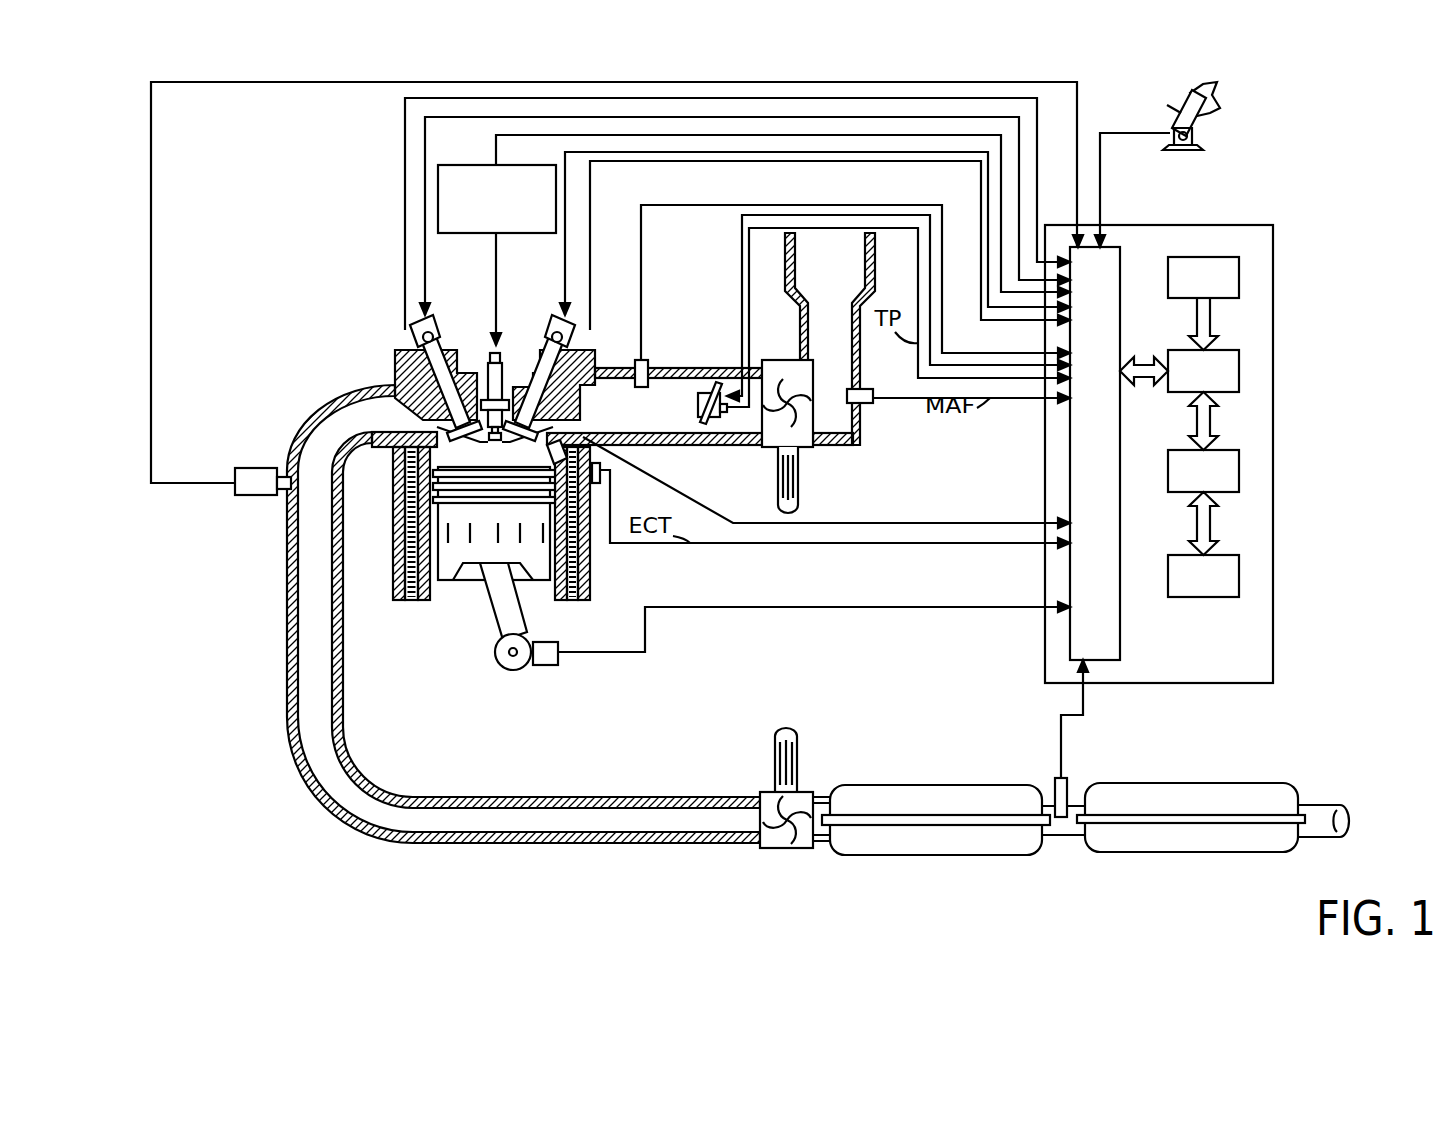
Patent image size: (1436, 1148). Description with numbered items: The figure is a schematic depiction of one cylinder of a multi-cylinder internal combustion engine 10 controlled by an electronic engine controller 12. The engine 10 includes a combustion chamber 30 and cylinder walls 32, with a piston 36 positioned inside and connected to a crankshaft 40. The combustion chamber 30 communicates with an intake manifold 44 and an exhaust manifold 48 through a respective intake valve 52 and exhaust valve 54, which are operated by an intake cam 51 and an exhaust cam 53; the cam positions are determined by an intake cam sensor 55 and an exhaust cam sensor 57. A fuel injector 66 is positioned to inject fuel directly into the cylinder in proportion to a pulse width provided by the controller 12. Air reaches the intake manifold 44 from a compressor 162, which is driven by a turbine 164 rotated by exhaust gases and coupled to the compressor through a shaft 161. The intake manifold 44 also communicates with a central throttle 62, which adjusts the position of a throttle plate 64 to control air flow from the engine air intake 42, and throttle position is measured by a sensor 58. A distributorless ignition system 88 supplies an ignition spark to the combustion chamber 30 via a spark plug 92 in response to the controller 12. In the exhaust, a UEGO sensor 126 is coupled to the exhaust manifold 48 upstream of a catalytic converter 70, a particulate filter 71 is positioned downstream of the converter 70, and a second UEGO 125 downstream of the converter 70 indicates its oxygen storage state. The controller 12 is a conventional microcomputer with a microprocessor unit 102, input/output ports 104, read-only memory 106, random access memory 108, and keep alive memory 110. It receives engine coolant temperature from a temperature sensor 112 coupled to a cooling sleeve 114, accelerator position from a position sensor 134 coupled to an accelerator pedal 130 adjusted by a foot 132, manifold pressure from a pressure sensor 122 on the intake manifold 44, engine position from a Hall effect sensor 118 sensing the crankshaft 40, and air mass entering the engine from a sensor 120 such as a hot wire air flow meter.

The internal combustion engine 10 is at (322, 296).
The electronic engine controller 12 is at (1272, 227).
The combustion chamber 30 is at (492, 450).
The cylinder walls 32 is at (437, 593).
The piston 36 is at (477, 548).
The crankshaft 40 is at (507, 670).
The engine air intake 42 is at (816, 282).
The intake manifold 44 is at (648, 405).
The exhaust manifold 48 is at (351, 426).
The intake cam 51 is at (547, 320).
The intake valve 52 is at (530, 390).
The exhaust cam 53 is at (422, 323).
The exhaust valve 54 is at (405, 395).
The intake cam sensor 55 is at (577, 340).
The exhaust cam sensor 57 is at (410, 340).
The throttle position sensor 58 is at (717, 420).
The central throttle 62 is at (703, 385).
The throttle plate 64 is at (722, 385).
The fuel injector 66 is at (590, 440).
The catalytic converter 70 is at (843, 857).
The particulate filter 71 is at (1088, 855).
The distributorless ignition system 88 is at (452, 165).
The spark plug 92 is at (487, 380).
The microprocessor unit 102 is at (1240, 368).
The input/output ports 104 is at (1122, 253).
The read-only memory 106 is at (1240, 272).
The random access memory 108 is at (1240, 470).
The keep alive memory 110 is at (1240, 570).
The temperature sensor 112 is at (599, 484).
The cooling sleeve 114 is at (574, 566).
The Hall effect sensor 118 is at (543, 668).
The air mass sensor 120 is at (862, 389).
The pressure sensor 122 is at (648, 360).
The second UEGO sensor 125 is at (1055, 782).
The UEGO sensor 126 is at (236, 473).
The accelerator pedal 130 is at (1168, 112).
The foot 132 is at (1218, 102).
The position sensor 134 is at (1200, 138).
The shaft 161 is at (798, 462).
The compressor 162 is at (772, 360).
The turbine 164 is at (760, 795).